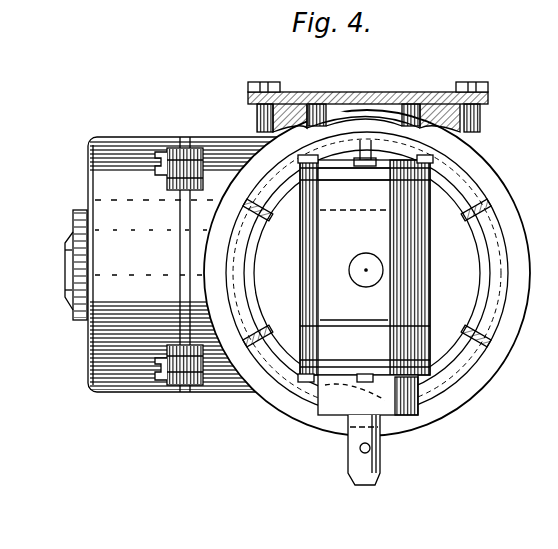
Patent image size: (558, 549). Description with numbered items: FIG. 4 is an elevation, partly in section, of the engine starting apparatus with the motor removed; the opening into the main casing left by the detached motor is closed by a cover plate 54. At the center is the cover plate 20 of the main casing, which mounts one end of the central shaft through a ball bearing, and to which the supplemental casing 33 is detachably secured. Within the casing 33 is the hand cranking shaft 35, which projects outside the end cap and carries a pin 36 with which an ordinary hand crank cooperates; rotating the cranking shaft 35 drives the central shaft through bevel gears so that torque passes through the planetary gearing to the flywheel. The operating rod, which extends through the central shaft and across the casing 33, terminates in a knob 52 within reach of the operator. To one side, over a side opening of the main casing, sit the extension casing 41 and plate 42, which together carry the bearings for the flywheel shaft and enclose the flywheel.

The cover plate 20 is at (458, 200).
The supplemental casing 33 is at (424, 248).
The hand cranking shaft 35 is at (380, 432).
The pin 36 is at (371, 450).
The extension casing 41 is at (90, 343).
The plate 42 is at (180, 245).
The knob 52 is at (366, 253).
The cover plate 54 is at (356, 92).